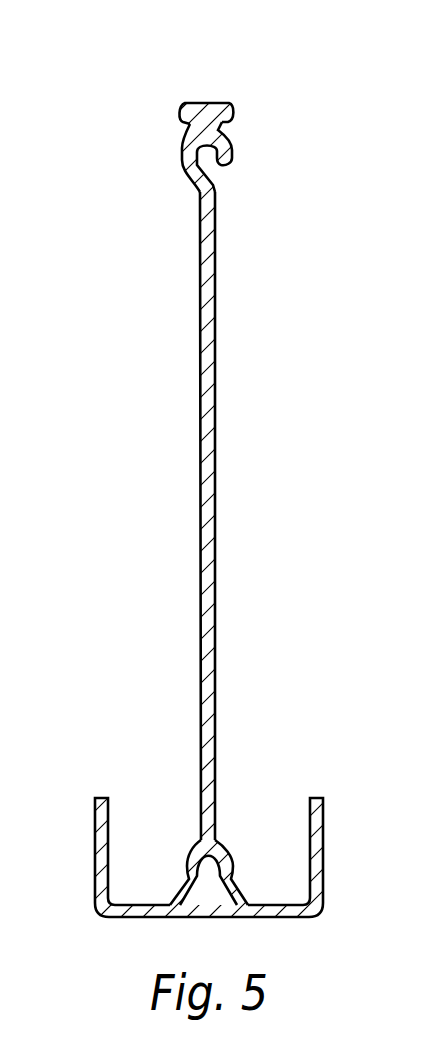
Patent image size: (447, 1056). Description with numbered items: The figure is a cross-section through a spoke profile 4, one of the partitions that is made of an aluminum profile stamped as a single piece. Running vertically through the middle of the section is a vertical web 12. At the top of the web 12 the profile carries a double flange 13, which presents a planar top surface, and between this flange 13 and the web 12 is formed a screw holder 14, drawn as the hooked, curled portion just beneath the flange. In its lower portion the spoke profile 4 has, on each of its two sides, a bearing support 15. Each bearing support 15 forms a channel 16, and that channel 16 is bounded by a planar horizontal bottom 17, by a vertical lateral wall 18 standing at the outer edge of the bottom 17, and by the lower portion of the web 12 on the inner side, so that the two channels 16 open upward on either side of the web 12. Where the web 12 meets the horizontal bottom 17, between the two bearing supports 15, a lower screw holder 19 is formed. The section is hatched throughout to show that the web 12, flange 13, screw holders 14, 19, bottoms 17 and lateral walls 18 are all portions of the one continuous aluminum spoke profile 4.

The spoke profile 4 is at (223, 525).
The vertical web 12 is at (213, 575).
The double flange 13 is at (218, 103).
The screw holder 14 is at (212, 165).
The bearing support 15 is at (95, 817).
The channel 16 is at (142, 840).
The planar horizontal bottom 17 is at (137, 910).
The vertical lateral wall 18 is at (98, 860).
The lower screw holder 19 is at (208, 867).